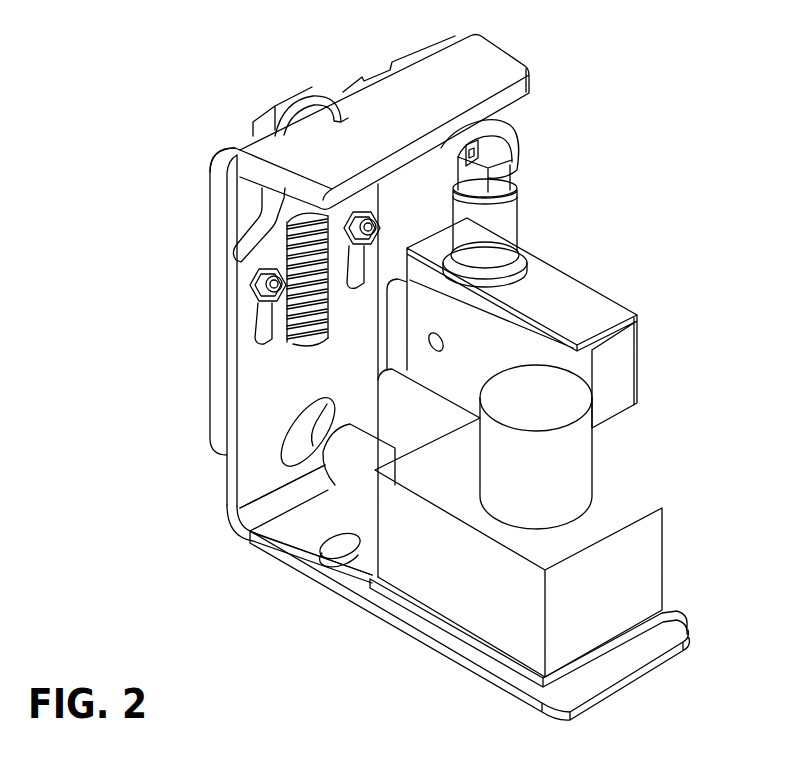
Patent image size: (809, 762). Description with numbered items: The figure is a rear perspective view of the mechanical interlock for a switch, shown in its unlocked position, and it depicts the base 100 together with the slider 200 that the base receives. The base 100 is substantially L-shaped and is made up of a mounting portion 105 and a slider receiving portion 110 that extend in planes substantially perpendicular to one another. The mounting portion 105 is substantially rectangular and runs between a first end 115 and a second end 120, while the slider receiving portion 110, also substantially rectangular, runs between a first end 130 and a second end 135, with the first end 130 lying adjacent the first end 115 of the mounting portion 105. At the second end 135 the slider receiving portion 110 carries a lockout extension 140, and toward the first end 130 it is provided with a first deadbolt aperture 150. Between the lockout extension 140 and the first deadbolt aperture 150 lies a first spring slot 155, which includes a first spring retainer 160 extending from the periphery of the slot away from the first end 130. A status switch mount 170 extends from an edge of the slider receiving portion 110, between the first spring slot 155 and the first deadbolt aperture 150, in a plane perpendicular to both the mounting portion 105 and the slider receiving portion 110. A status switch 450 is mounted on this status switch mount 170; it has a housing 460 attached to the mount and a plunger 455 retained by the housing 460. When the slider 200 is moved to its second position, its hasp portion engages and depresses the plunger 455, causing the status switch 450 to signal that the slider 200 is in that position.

The base 100 is at (428, 647).
The mounting portion 105 is at (363, 567).
The slider receiving portion 110 is at (257, 393).
The first end 115 is at (280, 533).
The second end 120 is at (620, 658).
The first end 130 is at (247, 488).
The second end 135 is at (260, 240).
The lockout extension 140 is at (311, 121).
The first deadbolt aperture 150 is at (300, 433).
The first spring slot 155 is at (288, 252).
The first spring retainer 160 is at (308, 328).
The status switch mount 170 is at (483, 355).
The slider 200 is at (223, 167).
The status switch 450 is at (603, 293).
The plunger 455 is at (502, 213).
The housing 460 is at (553, 293).